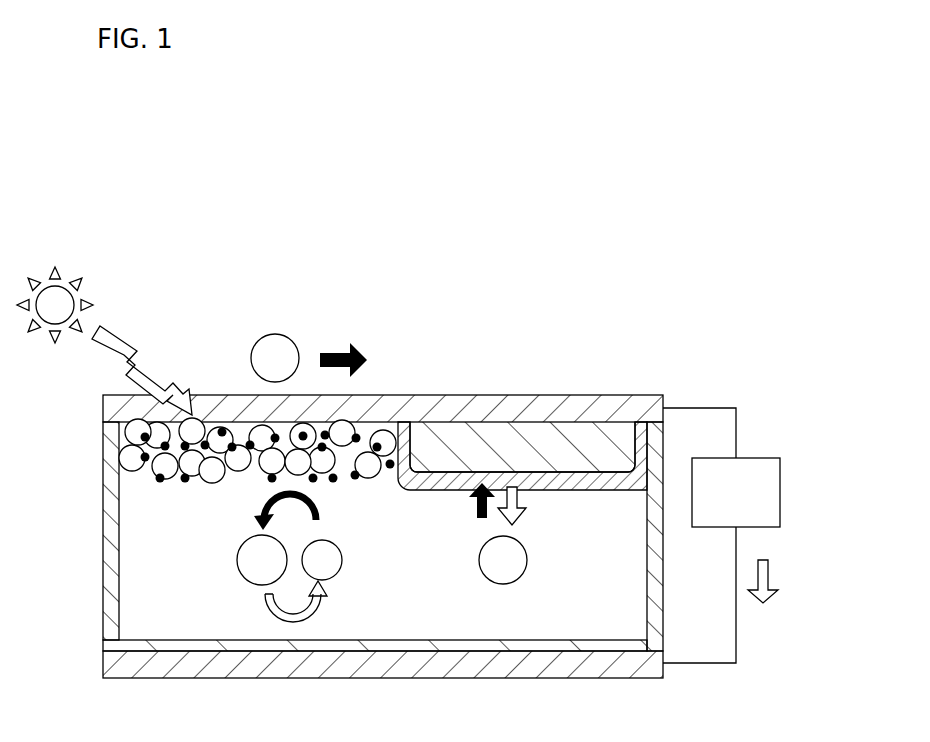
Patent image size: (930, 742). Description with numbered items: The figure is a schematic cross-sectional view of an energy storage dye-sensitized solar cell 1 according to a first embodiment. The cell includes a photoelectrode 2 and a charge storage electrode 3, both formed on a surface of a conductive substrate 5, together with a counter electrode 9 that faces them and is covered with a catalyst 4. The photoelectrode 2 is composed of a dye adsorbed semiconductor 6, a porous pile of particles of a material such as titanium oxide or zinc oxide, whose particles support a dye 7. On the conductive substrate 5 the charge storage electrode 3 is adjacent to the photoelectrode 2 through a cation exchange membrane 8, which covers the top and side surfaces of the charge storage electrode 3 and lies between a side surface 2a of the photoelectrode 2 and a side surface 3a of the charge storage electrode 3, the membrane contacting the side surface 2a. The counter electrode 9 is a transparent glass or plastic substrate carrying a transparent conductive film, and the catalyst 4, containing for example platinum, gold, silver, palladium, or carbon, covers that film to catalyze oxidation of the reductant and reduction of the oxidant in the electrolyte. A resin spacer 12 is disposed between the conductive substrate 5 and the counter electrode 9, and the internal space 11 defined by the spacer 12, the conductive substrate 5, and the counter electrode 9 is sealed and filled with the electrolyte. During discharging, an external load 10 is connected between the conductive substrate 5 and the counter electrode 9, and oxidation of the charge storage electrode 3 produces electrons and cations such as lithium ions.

The energy storage dye-sensitized solar cell 1 is at (488, 219).
The photoelectrode 2 is at (181, 492).
The side surface of the photoelectrode 2a is at (410, 433).
The charge storage electrode 3 is at (583, 478).
The side surface of the charge storage electrode 3a is at (416, 443).
The catalyst 4 is at (103, 645).
The conductive substrate 5 is at (103, 404).
The dye adsorbed semiconductor 6 is at (122, 468).
The dye 7 is at (157, 481).
The cation exchange membrane 8 is at (663, 490).
The counter electrode 9 is at (103, 663).
The external load 10 is at (780, 493).
The internal space 11 is at (630, 603).
The spacer 12 is at (105, 580).